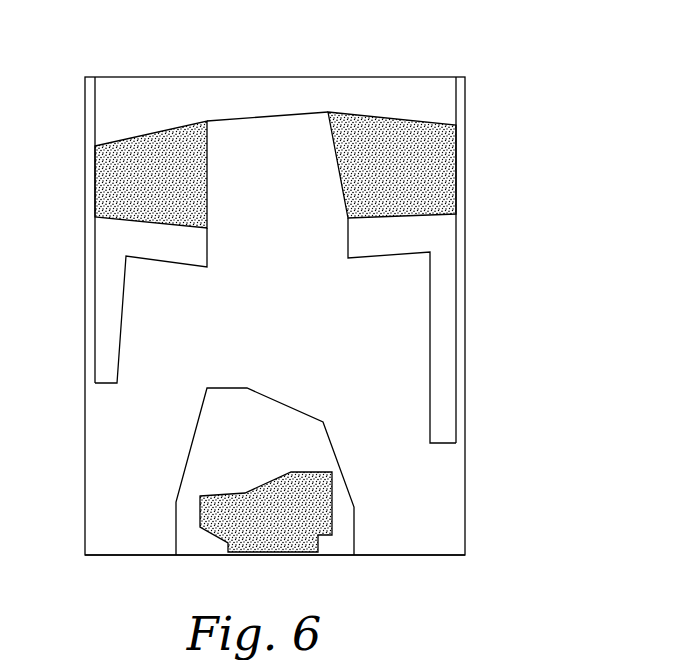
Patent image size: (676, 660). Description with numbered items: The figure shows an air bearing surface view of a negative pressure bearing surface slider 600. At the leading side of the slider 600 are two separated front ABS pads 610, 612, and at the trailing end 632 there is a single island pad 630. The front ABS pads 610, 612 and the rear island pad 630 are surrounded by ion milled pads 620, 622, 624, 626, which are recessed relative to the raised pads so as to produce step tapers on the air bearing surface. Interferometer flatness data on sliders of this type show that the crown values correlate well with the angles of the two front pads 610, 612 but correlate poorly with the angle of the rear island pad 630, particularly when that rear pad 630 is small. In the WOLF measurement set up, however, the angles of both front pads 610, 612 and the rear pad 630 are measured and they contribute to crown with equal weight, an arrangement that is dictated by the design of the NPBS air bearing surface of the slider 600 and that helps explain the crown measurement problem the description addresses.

The NPBS slider 600 is at (330, 309).
The front ABS pad 610 is at (117, 145).
The front ABS pad 612 is at (423, 122).
The ion milled pad 620 is at (265, 85).
The ion milled pad 622 is at (178, 255).
The ion milled pad 624 is at (389, 250).
The ion milled pad 626 is at (295, 435).
The island pad 630 is at (320, 540).
The trailing end 632 is at (127, 555).